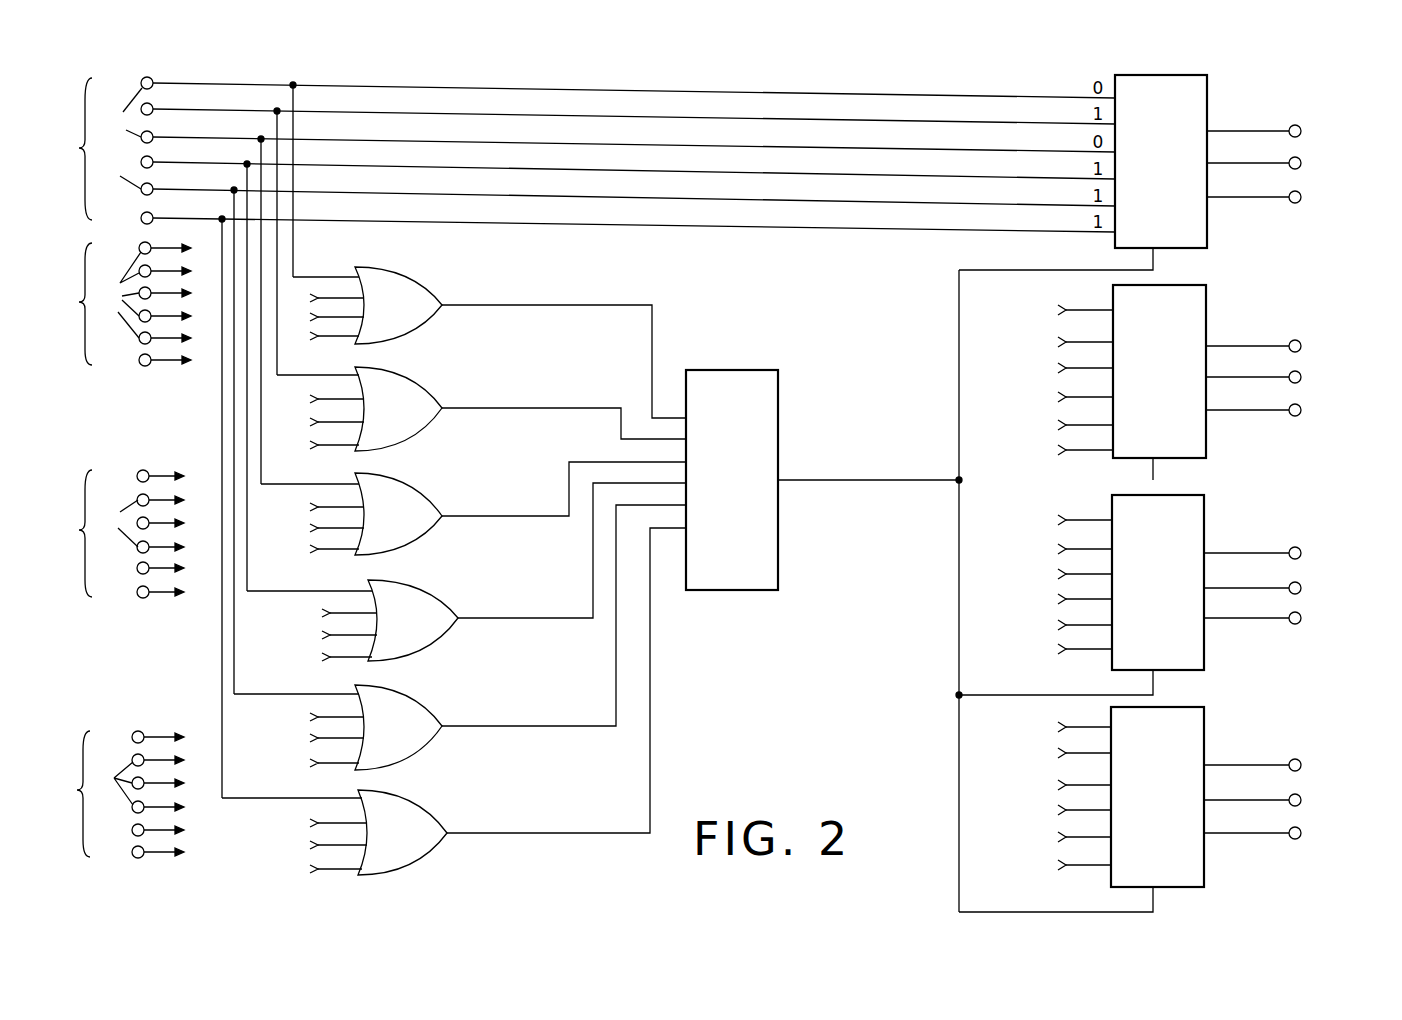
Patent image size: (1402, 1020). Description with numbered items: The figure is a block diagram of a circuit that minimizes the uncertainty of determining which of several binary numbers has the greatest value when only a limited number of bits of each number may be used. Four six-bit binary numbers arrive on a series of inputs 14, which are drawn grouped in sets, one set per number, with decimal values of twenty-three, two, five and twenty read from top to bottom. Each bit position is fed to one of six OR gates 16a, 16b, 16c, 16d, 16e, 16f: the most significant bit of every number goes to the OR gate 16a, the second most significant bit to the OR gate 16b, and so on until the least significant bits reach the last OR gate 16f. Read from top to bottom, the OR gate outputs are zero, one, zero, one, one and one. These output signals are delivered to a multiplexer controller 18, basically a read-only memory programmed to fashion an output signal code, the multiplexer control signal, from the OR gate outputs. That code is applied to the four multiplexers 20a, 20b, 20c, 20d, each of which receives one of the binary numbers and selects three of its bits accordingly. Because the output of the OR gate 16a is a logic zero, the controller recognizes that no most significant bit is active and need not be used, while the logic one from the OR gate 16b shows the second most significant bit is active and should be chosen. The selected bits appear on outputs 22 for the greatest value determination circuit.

The inputs 14 is at (128, 462).
The OR gate 16a is at (410, 331).
The OR gate 16b is at (418, 428).
The OR gate 16c is at (412, 543).
The OR gate 16d is at (446, 636).
The OR gate 16e is at (432, 744).
The OR gate 16f is at (432, 853).
The multiplexer controller 18 is at (748, 370).
The multiplexer 20a is at (1207, 85).
The multiplexer 20b is at (1206, 310).
The multiplexer 20c is at (1204, 512).
The multiplexer 20d is at (1204, 722).
The outputs 22 is at (1301, 133).